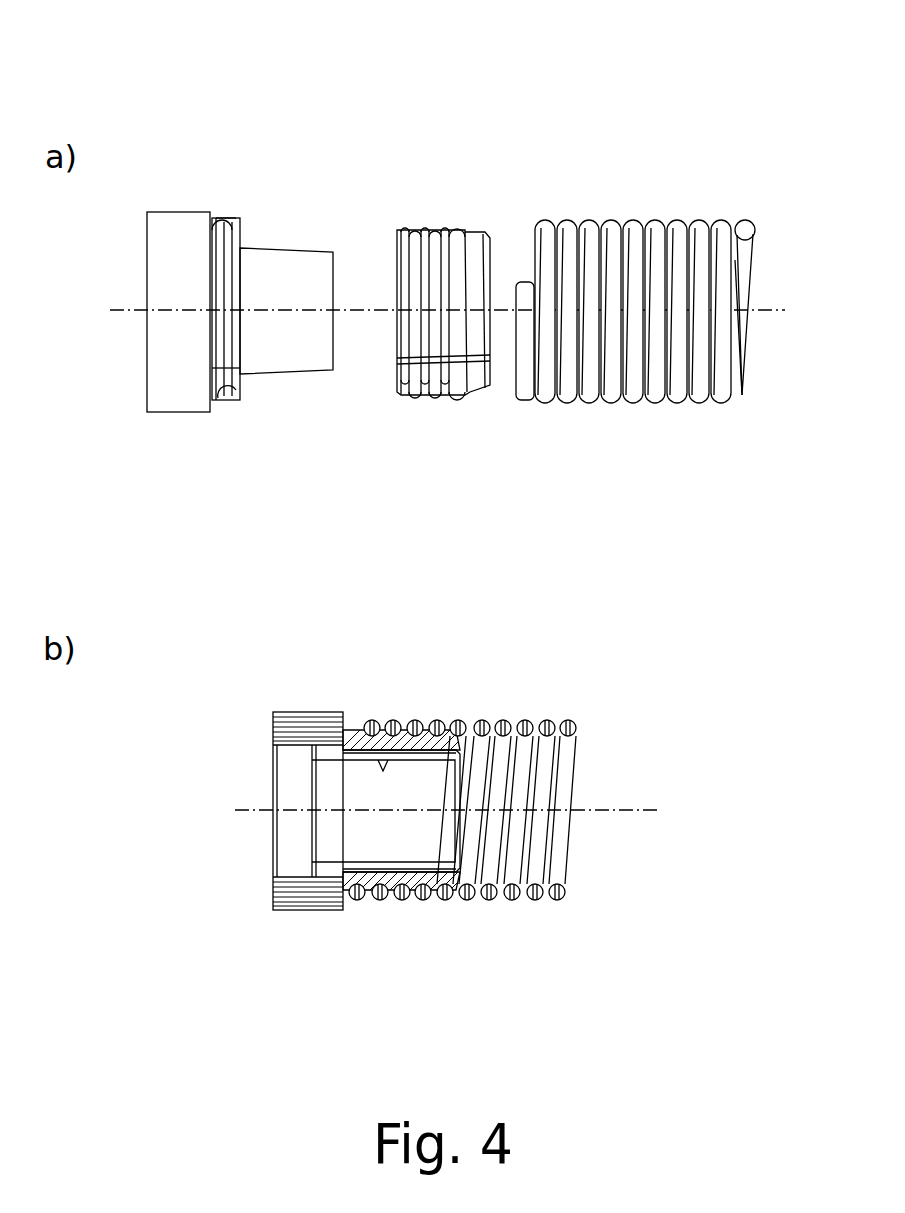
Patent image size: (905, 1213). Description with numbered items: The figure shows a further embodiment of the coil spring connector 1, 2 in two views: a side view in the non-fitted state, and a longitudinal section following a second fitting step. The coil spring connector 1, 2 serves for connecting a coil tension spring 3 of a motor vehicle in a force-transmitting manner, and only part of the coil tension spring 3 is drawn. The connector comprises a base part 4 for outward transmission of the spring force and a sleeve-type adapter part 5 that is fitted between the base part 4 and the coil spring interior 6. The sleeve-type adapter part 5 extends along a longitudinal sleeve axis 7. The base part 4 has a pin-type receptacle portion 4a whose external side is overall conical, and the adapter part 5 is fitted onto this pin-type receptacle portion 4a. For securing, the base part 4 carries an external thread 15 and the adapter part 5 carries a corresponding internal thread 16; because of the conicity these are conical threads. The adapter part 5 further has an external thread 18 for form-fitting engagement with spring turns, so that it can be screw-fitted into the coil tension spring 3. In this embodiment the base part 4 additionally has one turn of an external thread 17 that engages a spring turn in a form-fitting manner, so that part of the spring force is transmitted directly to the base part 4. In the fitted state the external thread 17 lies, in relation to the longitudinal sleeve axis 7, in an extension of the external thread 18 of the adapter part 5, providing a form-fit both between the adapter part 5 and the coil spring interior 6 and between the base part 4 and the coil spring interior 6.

The coil spring connector 1 is at (460, 521).
The coil spring connector 2 is at (233, 107).
The coil tension spring 3 is at (608, 228).
The base part 4 is at (185, 437).
The pin-type receptacle portion 4a is at (273, 353).
The sleeve-type adapter part 5 is at (480, 197).
The coil spring interior 6 is at (500, 755).
The longitudinal sleeve axis 7 is at (760, 311).
The external thread 15 is at (380, 768).
The internal thread 16 is at (445, 735).
The external thread 17 is at (226, 247).
The external thread 18 is at (422, 237).